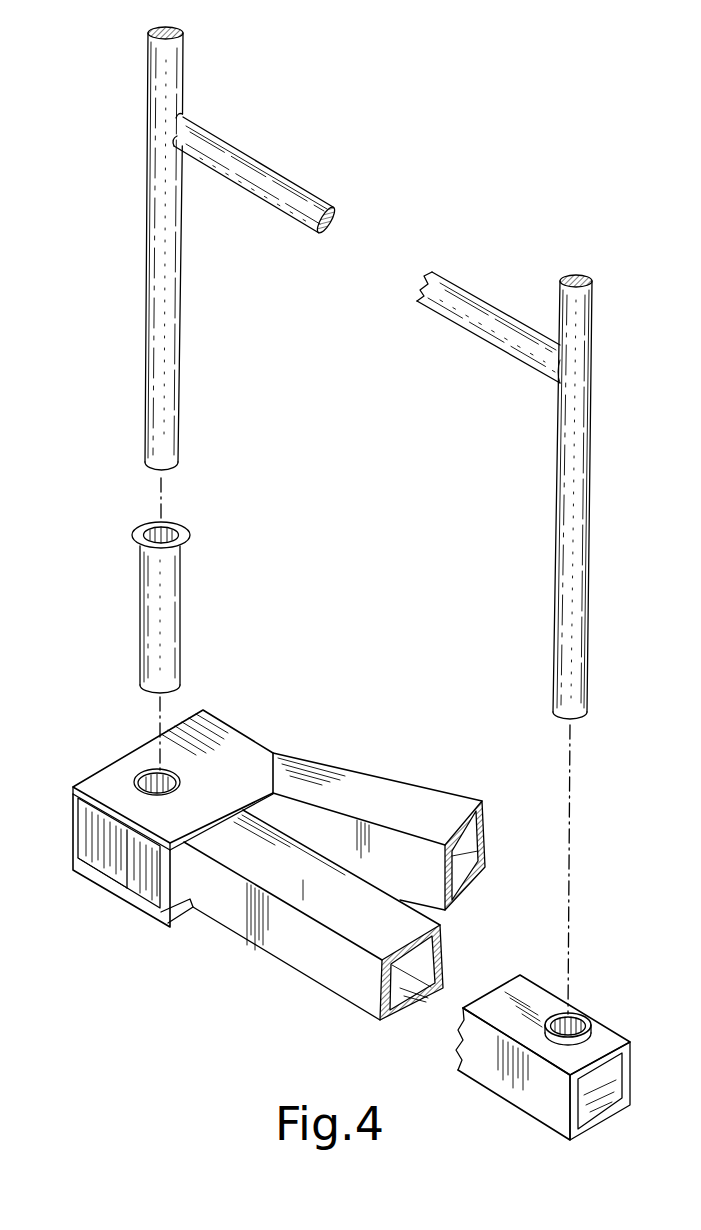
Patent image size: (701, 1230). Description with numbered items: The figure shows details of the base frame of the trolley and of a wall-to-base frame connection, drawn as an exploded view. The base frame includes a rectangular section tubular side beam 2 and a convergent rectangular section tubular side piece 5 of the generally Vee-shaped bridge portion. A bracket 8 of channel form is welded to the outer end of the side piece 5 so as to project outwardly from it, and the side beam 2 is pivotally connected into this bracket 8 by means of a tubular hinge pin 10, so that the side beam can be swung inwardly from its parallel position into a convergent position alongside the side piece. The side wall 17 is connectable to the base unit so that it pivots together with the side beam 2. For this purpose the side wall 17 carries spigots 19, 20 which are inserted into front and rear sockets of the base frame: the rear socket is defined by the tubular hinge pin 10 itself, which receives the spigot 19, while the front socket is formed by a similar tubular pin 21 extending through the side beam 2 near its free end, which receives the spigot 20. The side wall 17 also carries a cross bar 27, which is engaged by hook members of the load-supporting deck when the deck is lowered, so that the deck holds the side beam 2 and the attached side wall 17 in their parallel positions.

The side beam 2 is at (313, 972).
The side piece 5 is at (367, 792).
The bracket 8 is at (223, 757).
The tubular hinge pin 10 is at (158, 618).
The side wall 17 is at (136, 431).
The spigot 19 is at (158, 362).
The spigot 20 is at (577, 470).
The tubular pin 21 is at (581, 1017).
The cross bar 27 is at (275, 193).